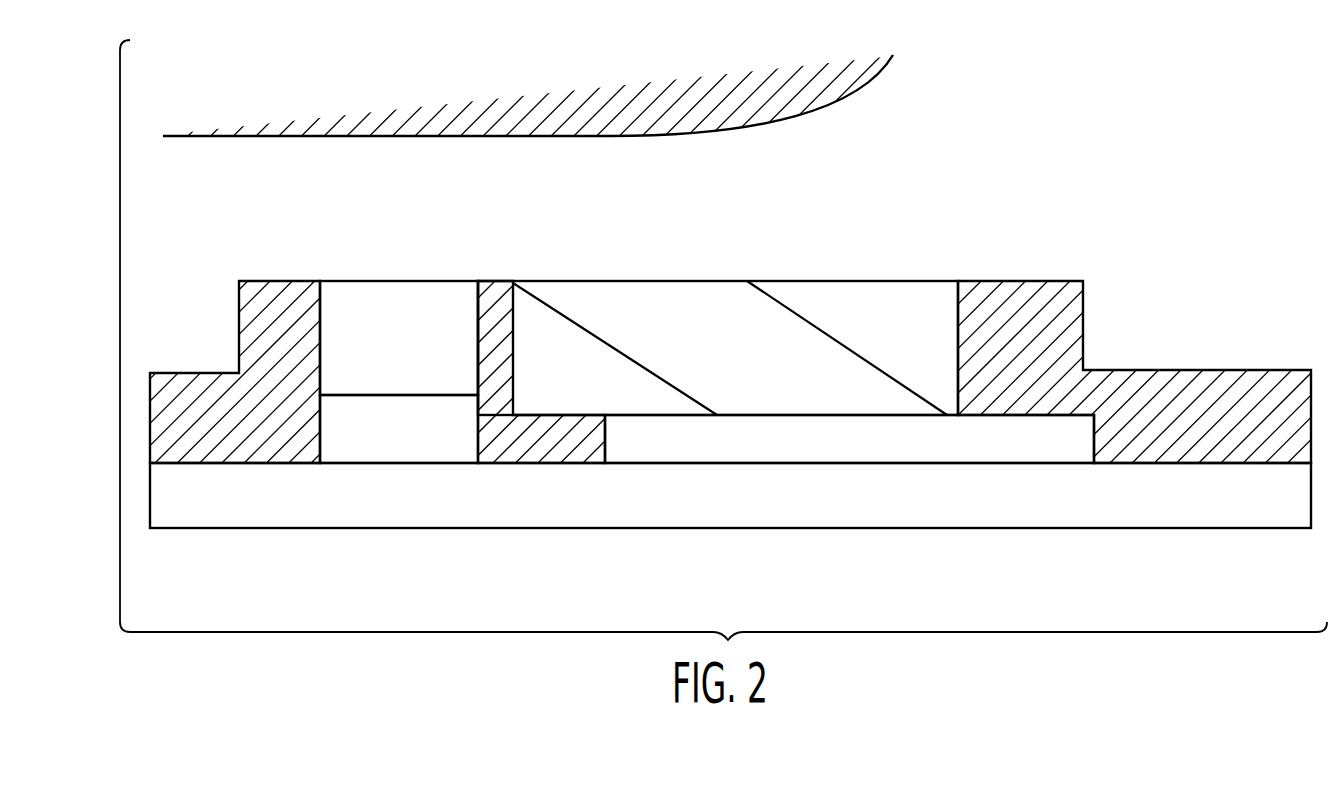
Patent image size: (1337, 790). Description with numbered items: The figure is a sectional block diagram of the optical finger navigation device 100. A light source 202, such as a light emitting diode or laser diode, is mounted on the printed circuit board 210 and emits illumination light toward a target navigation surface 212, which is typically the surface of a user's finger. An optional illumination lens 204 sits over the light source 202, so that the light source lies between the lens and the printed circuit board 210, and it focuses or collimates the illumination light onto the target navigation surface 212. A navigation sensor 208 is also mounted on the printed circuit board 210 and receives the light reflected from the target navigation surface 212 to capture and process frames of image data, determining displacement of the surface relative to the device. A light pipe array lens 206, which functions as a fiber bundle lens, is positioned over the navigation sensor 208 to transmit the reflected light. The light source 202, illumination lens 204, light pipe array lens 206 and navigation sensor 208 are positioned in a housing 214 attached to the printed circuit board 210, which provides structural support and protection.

The optical finger navigation device 100 is at (1233, 235).
The light source 202 is at (385, 443).
The illumination lens 204 is at (387, 298).
The light pipe array lens 206 is at (855, 281).
The navigation sensor 208 is at (1002, 438).
The printed circuit board 210 is at (1242, 510).
The target navigation surface 212 is at (875, 80).
The housing 214 is at (1273, 378).